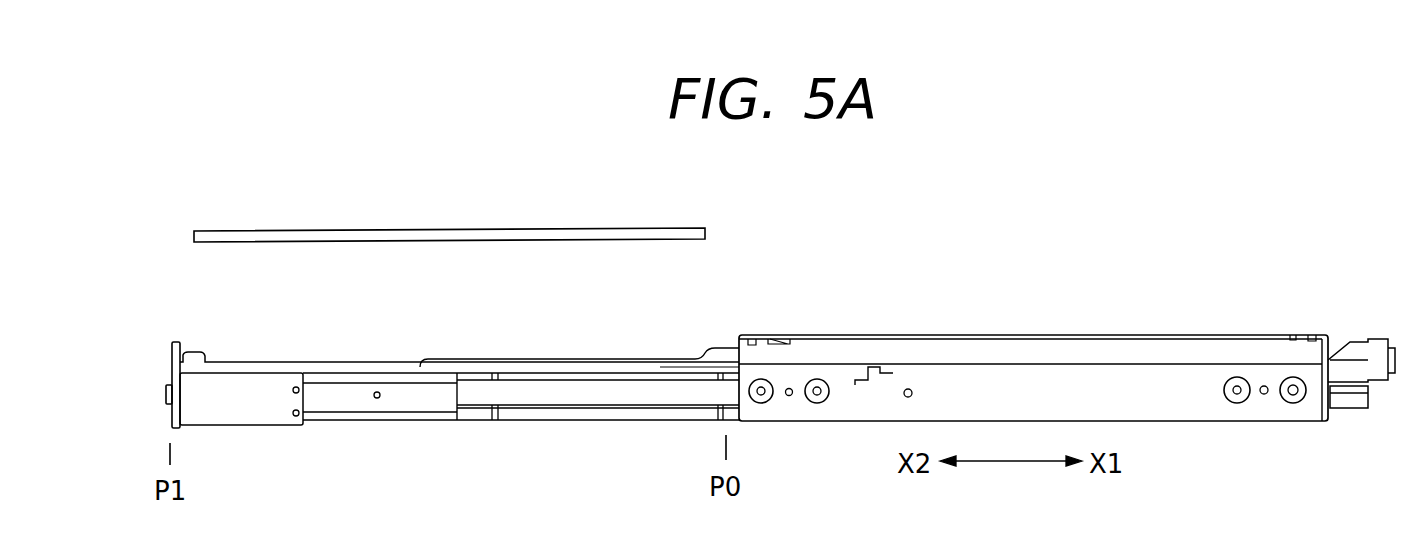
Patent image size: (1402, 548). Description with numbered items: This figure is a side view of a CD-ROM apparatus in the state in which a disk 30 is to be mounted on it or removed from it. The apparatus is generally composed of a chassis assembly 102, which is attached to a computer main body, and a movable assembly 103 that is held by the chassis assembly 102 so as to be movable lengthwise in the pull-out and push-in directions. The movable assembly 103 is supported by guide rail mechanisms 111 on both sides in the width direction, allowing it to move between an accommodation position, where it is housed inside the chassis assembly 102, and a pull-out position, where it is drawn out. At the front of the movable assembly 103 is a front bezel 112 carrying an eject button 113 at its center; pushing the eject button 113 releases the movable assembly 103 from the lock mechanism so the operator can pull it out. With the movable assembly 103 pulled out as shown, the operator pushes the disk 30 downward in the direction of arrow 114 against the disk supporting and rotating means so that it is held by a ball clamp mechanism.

The disk 30 is at (241, 231).
The chassis assembly 102 is at (977, 332).
The movable assembly 103 is at (393, 427).
The guide rail mechanism 111 is at (571, 415).
The front bezel 112 is at (171, 367).
The eject button 113 is at (166, 395).
The arrow 114 is at (447, 267).